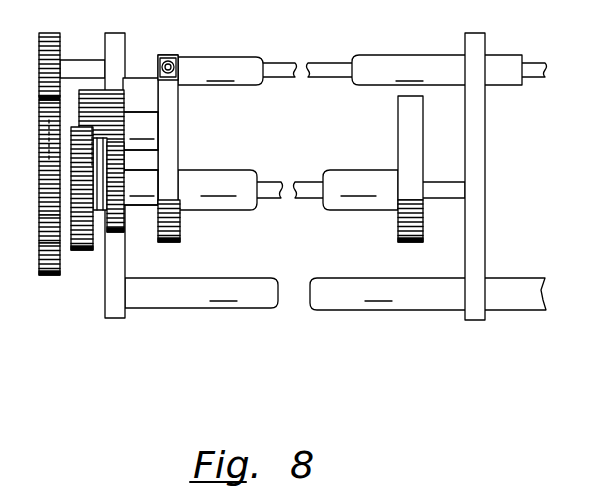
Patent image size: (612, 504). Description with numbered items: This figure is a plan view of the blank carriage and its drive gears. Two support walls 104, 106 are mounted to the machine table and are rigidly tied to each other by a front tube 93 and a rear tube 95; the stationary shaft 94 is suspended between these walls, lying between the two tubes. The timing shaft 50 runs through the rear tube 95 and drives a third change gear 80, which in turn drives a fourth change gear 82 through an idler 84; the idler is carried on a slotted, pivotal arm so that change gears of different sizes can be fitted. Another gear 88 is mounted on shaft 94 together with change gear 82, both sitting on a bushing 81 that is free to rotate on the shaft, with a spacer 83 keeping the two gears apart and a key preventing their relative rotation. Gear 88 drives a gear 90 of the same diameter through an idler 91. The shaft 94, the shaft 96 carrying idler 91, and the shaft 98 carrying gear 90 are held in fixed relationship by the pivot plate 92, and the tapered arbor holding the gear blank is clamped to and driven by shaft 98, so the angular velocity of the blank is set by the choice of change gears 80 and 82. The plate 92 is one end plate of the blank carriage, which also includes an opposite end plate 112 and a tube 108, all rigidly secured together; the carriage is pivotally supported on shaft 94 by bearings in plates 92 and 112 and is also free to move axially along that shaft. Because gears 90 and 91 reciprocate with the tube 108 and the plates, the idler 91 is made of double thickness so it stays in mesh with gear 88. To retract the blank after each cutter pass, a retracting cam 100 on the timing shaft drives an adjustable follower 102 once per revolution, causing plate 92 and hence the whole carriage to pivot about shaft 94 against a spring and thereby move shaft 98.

The timing shaft 50 is at (90, 60).
The third change gear 80 is at (51, 33).
The bushing 81 is at (85, 222).
The fourth change gear 82 is at (48, 250).
The spacer 83 is at (70, 213).
The idler 84 is at (49, 158).
The gear 88 is at (76, 256).
The gear 90 is at (124, 217).
The idler 91 is at (118, 108).
The pivot plate 92 is at (178, 131).
The tube 93 is at (335, 294).
The shaft 94 is at (264, 180).
The rear tube 95 is at (350, 70).
The shaft 96 is at (140, 131).
The shaft 98 is at (140, 187).
The retracting cam 100 is at (167, 54).
The adjustable follower 102 is at (175, 64).
The support wall 104 is at (107, 292).
The support wall 106 is at (485, 130).
The tube 108 is at (288, 190).
The end plate 112 is at (398, 128).